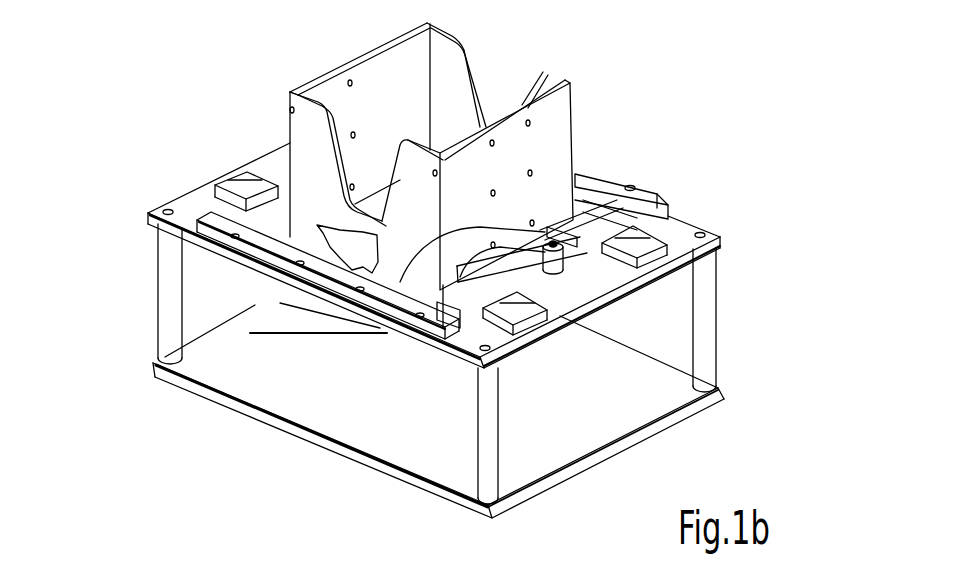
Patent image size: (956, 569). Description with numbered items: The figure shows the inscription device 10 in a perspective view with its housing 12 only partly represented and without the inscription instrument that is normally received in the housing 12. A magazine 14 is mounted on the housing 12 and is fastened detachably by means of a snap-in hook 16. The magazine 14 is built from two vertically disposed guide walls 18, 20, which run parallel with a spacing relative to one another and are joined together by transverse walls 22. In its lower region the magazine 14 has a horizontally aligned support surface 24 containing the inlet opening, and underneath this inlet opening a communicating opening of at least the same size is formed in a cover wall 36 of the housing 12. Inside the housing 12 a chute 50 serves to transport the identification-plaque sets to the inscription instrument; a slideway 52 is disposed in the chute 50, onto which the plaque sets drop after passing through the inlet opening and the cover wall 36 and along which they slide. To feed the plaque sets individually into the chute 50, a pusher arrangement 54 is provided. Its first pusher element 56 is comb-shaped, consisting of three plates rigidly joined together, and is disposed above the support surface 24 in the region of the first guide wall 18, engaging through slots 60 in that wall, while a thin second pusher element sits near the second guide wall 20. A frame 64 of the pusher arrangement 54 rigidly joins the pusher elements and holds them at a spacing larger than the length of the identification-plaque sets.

The inscription device 10 is at (645, 83).
The housing 12 is at (653, 400).
The magazine 14 is at (563, 128).
The snap-in hook 16 is at (335, 222).
The first guide wall 18 is at (550, 176).
The second guide wall 20 is at (327, 72).
The transverse walls 22 is at (305, 133).
The support surface 24 is at (347, 207).
The cover wall 36 is at (510, 265).
The chute 50 is at (212, 268).
The slideway 52 is at (301, 302).
The pusher arrangement 54 is at (658, 183).
The first pusher element 56 is at (563, 242).
The slots 60 is at (480, 232).
The frame 64 is at (672, 205).